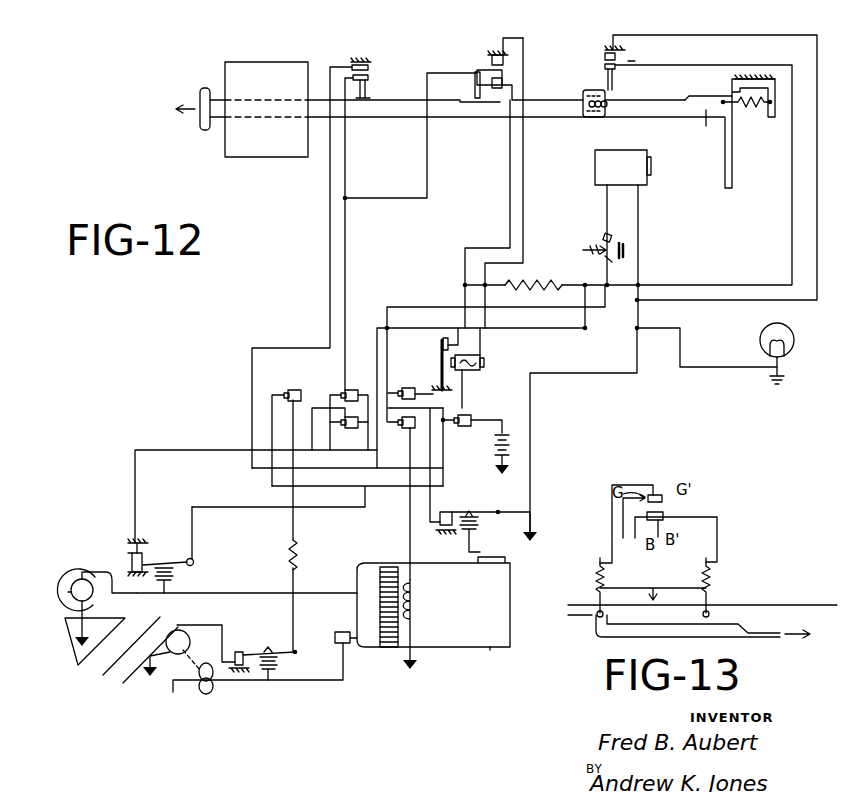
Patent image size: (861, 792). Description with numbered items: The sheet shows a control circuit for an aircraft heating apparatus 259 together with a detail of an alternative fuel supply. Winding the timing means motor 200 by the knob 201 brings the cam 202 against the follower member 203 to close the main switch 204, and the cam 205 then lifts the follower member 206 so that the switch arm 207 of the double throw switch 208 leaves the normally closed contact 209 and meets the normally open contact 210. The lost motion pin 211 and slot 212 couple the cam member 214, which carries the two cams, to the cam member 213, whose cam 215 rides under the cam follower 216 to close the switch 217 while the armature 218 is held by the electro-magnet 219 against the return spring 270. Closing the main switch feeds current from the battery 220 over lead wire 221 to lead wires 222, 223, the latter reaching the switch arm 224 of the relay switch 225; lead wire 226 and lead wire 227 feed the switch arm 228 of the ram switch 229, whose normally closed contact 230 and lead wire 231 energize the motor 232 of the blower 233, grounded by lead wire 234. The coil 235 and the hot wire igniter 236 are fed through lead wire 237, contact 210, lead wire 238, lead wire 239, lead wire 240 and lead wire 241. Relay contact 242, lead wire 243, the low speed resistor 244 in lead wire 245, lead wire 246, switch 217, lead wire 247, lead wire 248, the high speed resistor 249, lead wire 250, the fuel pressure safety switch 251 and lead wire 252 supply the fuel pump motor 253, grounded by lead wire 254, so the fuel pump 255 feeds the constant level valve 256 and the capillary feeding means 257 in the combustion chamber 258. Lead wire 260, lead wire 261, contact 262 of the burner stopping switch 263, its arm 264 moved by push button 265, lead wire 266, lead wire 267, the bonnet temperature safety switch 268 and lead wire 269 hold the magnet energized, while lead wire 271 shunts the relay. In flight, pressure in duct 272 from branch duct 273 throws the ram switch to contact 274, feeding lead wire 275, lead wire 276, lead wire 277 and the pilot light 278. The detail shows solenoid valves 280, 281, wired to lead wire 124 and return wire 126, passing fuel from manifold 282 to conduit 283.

In FIG. 12, the timing means motor 200 is at (277, 158).
In FIG. 12, the key or knob 201 is at (200, 126).
In FIG. 12, the cam 202 is at (367, 92).
In FIG. 12, the switch operating follower member 203 is at (363, 100).
In FIG. 12, the main switch 204 is at (373, 57).
In FIG. 12, the cam 205 is at (544, 97).
In FIG. 12, the switch operating follower member 206 is at (475, 83).
In FIG. 12, the switch arm 207 is at (480, 70).
In FIG. 12, the double throw switch 208 is at (489, 47).
In FIG. 12, the normally closed contact 209 is at (503, 78).
In FIG. 12, the normally open contact 210 is at (497, 53).
In FIG. 12, the lost motion pin 211 is at (592, 110).
In FIG. 12, the lost motion slot 212 is at (592, 90).
In FIG. 12, the cam member 213 is at (703, 127).
In FIG. 12, the cam member 214 is at (460, 119).
In FIG. 12, the cam 215 is at (686, 97).
In FIG. 12, the cam follower 216 is at (606, 60).
In FIG. 12, the cam operated switch 217 is at (633, 63).
In FIG. 12, the holding means armature 218 is at (733, 161).
In FIG. 12, the electro-magnet 219 is at (594, 177).
In FIG. 12, the battery 220 is at (494, 444).
In FIG. 12, the lead wire 221 is at (473, 419).
In FIG. 12, the lead wire 222 is at (330, 242).
In FIG. 12, the lead wire 223 is at (438, 400).
In FIG. 12, the switch arm 224 is at (440, 366).
In FIG. 12, the relay switch 225 is at (435, 346).
In FIG. 12, the lead wire 226 is at (346, 181).
In FIG. 12, the lead wire 227 is at (236, 506).
In FIG. 12, the switch arm 228 is at (163, 566).
In FIG. 12, the ram switch 229 is at (128, 547).
In FIG. 12, the normally closed contact 230 is at (134, 584).
In FIG. 12, the lead wire 231 is at (106, 572).
In FIG. 12, the motor 232 is at (68, 576).
In FIG. 12, the combustion air blower 233 is at (70, 598).
In FIG. 12, the lead wire 234 is at (74, 642).
In FIG. 12, the coil 235 is at (483, 370).
In FIG. 12, the hot wire igniting means 236 is at (415, 599).
In FIG. 12, the lead wire 237 is at (394, 186).
In FIG. 12, the lead wire 238 is at (525, 213).
In FIG. 12, the lead wire 239 is at (400, 430).
In FIG. 12, the lead wire 240 is at (408, 522).
In FIG. 12, the lead wire 241 is at (418, 665).
In FIG. 12, the relay contact 242 is at (460, 331).
In FIG. 12, the lead wire 243 is at (462, 293).
In FIG. 12, the low motor speed resistor 244 is at (541, 288).
In FIG. 12, the lead wire 245 is at (563, 286).
In FIG. 12, the lead wire 246 is at (690, 286).
In FIG. 12, the lead wire 247 is at (815, 185).
In FIG. 12, the lead wire 248 is at (291, 525).
In FIG. 12, the high motor speed resistor 249 is at (300, 546).
In FIG. 12, the lead wire 250 is at (292, 584).
In FIG. 12, the fuel pressure responsive safety switch 251 is at (254, 671).
In FIG. 12, the lead wire 252 is at (223, 633).
In FIG. 12, the fuel pump motor 253 is at (189, 646).
In FIG. 12, the lead wire 254 is at (163, 661).
In FIG. 12, the fuel pump 255 is at (211, 694).
In FIG. 12, the constant level valve 256 is at (338, 653).
In FIG. 12, the capillary oil feeding means 257 is at (388, 650).
In FIG. 12, the combustion chamber 258 is at (481, 623).
In FIG. 12, the heating apparatus 259 is at (490, 651).
In FIG. 12, the lead wire 260 is at (641, 246).
In FIG. 12, the lead wire 261 is at (605, 218).
In FIG. 12, the contact 262 is at (603, 232).
In FIG. 12, the burner stopping switch 263 is at (619, 238).
In FIG. 12, the switch arm 264 is at (606, 259).
In FIG. 12, the push button 265 is at (582, 248).
In FIG. 12, the lead wire 266 is at (388, 305).
In FIG. 12, the lead wire 267 is at (446, 511).
In FIG. 12, the bonnet temperature responsive safety switch 268 is at (456, 537).
In FIG. 12, the lead wire 269 is at (532, 518).
In FIG. 12, the return spring 270 is at (755, 108).
In FIG. 12, the lead wire 271 is at (509, 178).
In FIG. 12, the air supply duct 272 is at (207, 599).
In FIG. 12, the branch duct 273 is at (110, 688).
In FIG. 12, the normally opened contact 274 is at (131, 543).
In FIG. 12, the lead wire 275 is at (142, 450).
In FIG. 12, the lead wire 276 is at (377, 363).
In FIG. 12, the lead wire 277 is at (684, 358).
In FIG. 12, the pilot light indicator 278 is at (782, 370).
In FIG. 13, the return wire 126 is at (612, 531).
In FIG. 13, the lead wire 124 is at (718, 535).
In FIG. 13, the solenoid valve 280 is at (710, 595).
In FIG. 13, the solenoid valve 281 is at (597, 592).
In FIG. 13, the manifold or conduit 282 is at (580, 606).
In FIG. 13, the pipe or conduit 283 is at (768, 640).